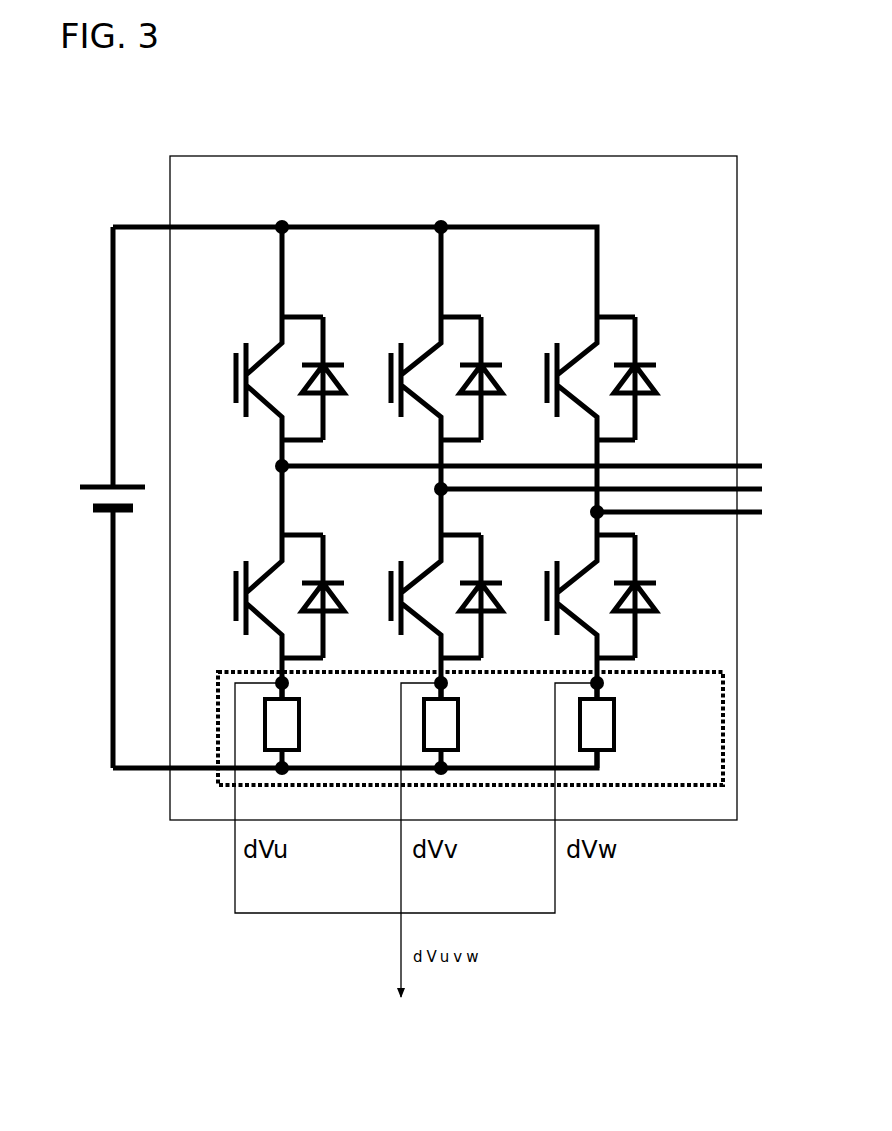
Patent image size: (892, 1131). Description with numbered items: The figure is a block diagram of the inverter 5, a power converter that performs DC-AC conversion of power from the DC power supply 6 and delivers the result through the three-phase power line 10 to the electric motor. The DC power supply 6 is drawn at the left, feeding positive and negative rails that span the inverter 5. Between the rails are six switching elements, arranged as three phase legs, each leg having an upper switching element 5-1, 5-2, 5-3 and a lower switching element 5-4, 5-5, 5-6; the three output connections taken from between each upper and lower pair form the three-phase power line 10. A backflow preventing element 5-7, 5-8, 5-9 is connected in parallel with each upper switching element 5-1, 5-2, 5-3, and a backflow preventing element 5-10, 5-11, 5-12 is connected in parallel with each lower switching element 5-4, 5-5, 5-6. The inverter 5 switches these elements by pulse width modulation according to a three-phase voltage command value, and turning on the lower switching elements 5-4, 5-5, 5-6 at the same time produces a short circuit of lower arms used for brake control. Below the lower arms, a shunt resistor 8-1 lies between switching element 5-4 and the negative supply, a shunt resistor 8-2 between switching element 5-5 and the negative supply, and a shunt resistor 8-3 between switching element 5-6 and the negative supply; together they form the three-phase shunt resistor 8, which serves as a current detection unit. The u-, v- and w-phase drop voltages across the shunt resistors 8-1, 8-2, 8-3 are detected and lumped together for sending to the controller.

The inverter 5 is at (547, 157).
The switching element 5-1 is at (262, 348).
The switching element 5-2 is at (422, 348).
The switching element 5-3 is at (579, 348).
The switching element 5-4 is at (262, 580).
The switching element 5-5 is at (430, 570).
The switching element 5-6 is at (580, 578).
The backflow preventing element 5-7 is at (346, 360).
The backflow preventing element 5-8 is at (500, 357).
The backflow preventing element 5-9 is at (657, 360).
The backflow preventing element 5-10 is at (354, 594).
The backflow preventing element 5-11 is at (507, 590).
The backflow preventing element 5-12 is at (660, 595).
The DC power supply 6 is at (80, 486).
The three-phase shunt resistor 8 is at (672, 672).
The shunt resistor 8-1 is at (304, 744).
The shunt resistor 8-2 is at (463, 744).
The shunt resistor 8-3 is at (619, 744).
The three-phase power line 10 is at (776, 432).